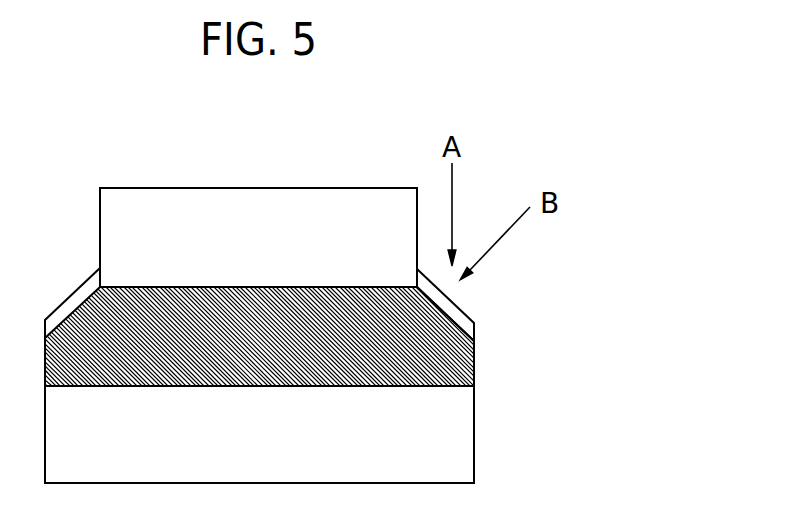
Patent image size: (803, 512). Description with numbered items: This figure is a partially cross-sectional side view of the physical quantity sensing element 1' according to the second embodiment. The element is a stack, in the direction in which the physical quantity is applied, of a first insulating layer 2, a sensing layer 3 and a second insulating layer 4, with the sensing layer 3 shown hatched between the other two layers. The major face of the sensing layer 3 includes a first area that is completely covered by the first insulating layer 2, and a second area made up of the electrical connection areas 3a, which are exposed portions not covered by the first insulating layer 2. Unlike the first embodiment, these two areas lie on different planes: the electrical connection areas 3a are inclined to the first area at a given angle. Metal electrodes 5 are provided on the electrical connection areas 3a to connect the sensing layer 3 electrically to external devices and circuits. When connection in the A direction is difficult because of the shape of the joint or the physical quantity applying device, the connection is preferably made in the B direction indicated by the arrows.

The physical quantity sensing element 1' is at (372, 274).
The first insulating layer 2 is at (260, 193).
The sensing layer 3 is at (475, 362).
The electrical connection areas 3a is at (475, 342).
The second insulating layer 4 is at (465, 442).
The metal electrodes 5 is at (465, 313).